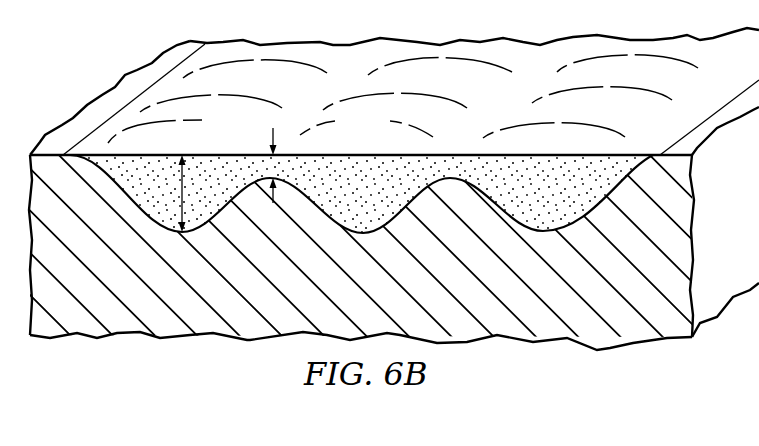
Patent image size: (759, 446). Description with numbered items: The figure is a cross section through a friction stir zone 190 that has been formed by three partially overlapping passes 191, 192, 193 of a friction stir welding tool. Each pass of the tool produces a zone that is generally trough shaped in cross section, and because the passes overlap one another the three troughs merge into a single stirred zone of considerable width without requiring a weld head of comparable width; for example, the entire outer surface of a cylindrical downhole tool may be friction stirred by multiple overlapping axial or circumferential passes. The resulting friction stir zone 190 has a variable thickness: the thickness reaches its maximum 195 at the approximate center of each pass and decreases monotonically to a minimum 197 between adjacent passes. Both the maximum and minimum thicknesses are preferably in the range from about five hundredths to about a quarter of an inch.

The friction stir zone 190 is at (359, 160).
The first pass 191 is at (182, 236).
The second pass 192 is at (362, 237).
The third pass 193 is at (542, 234).
The maximum thickness 195 is at (183, 205).
The minimum thickness 197 is at (272, 163).